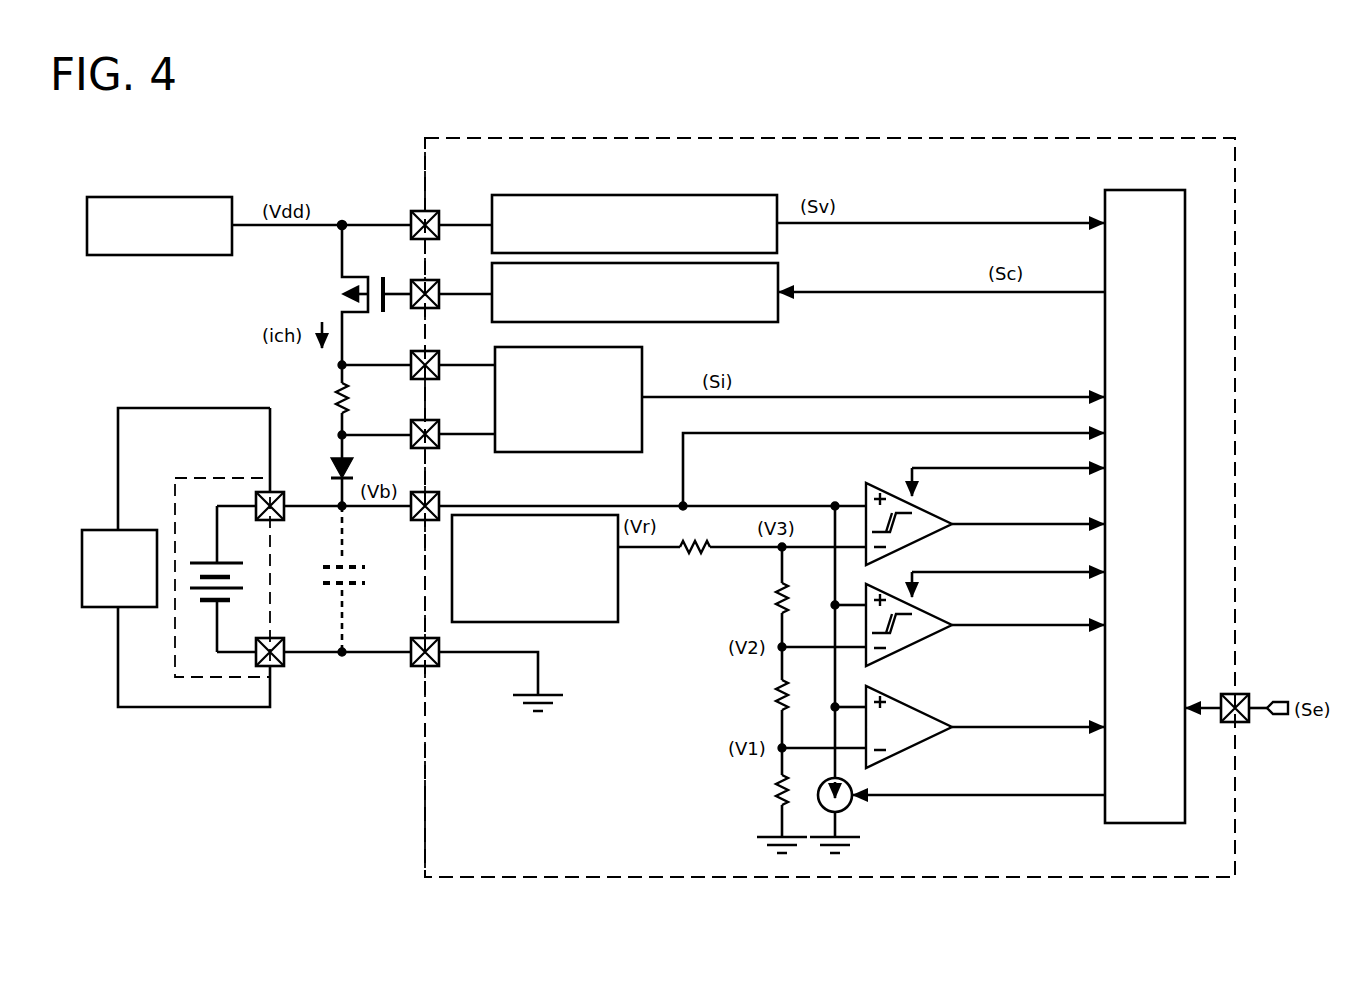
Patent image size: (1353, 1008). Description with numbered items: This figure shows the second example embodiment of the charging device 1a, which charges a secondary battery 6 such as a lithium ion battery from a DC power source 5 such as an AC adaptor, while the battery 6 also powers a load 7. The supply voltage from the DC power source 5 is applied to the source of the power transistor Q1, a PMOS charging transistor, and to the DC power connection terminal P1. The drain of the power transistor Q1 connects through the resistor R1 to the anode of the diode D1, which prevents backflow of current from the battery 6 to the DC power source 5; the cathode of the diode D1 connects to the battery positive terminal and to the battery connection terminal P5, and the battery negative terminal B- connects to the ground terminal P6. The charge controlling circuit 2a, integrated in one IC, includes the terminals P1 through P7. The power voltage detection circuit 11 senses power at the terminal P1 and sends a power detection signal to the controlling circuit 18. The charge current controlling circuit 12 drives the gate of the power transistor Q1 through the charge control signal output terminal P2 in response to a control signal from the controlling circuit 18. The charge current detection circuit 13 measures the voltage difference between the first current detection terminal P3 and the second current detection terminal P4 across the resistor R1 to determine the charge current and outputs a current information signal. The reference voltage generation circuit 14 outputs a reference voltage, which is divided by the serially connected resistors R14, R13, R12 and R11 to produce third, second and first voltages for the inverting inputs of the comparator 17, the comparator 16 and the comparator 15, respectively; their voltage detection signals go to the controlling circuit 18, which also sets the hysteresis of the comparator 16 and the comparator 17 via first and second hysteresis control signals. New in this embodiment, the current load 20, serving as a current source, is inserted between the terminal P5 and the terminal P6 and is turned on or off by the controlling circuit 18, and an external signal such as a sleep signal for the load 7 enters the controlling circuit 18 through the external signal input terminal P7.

The charging device 1a is at (1080, 100).
The charge controlling circuit 2a is at (960, 136).
The DC power source 5 is at (130, 196).
The secondary battery 6 is at (200, 476).
The load 7 is at (100, 526).
The power voltage detection circuit 11 is at (777, 238).
The charge current controlling circuit 12 is at (778, 312).
The charge current detection circuit 13 is at (642, 355).
The reference voltage generation circuit 14 is at (596, 622).
The comparator 15 is at (910, 750).
The comparator 16 is at (910, 648).
The comparator 17 is at (871, 484).
The controlling circuit 18 is at (1165, 190).
The current load 20 is at (852, 806).
The power transistor Q1 is at (376, 295).
The resistor R1 is at (354, 398).
The diode D1 is at (325, 470).
The resistor R11 is at (765, 800).
The resistor R12 is at (756, 697).
The resistor R13 is at (756, 597).
The resistor R14 is at (742, 562).
The DC power connection terminal P1 is at (440, 217).
The charge control signal output terminal P2 is at (440, 286).
The first current detection terminal P3 is at (440, 357).
The second current detection terminal P4 is at (440, 426).
The battery connection terminal P5 is at (440, 498).
The ground terminal P6 is at (440, 660).
The external signal input terminal P7 is at (1240, 694).
The battery terminal B- is at (284, 660).